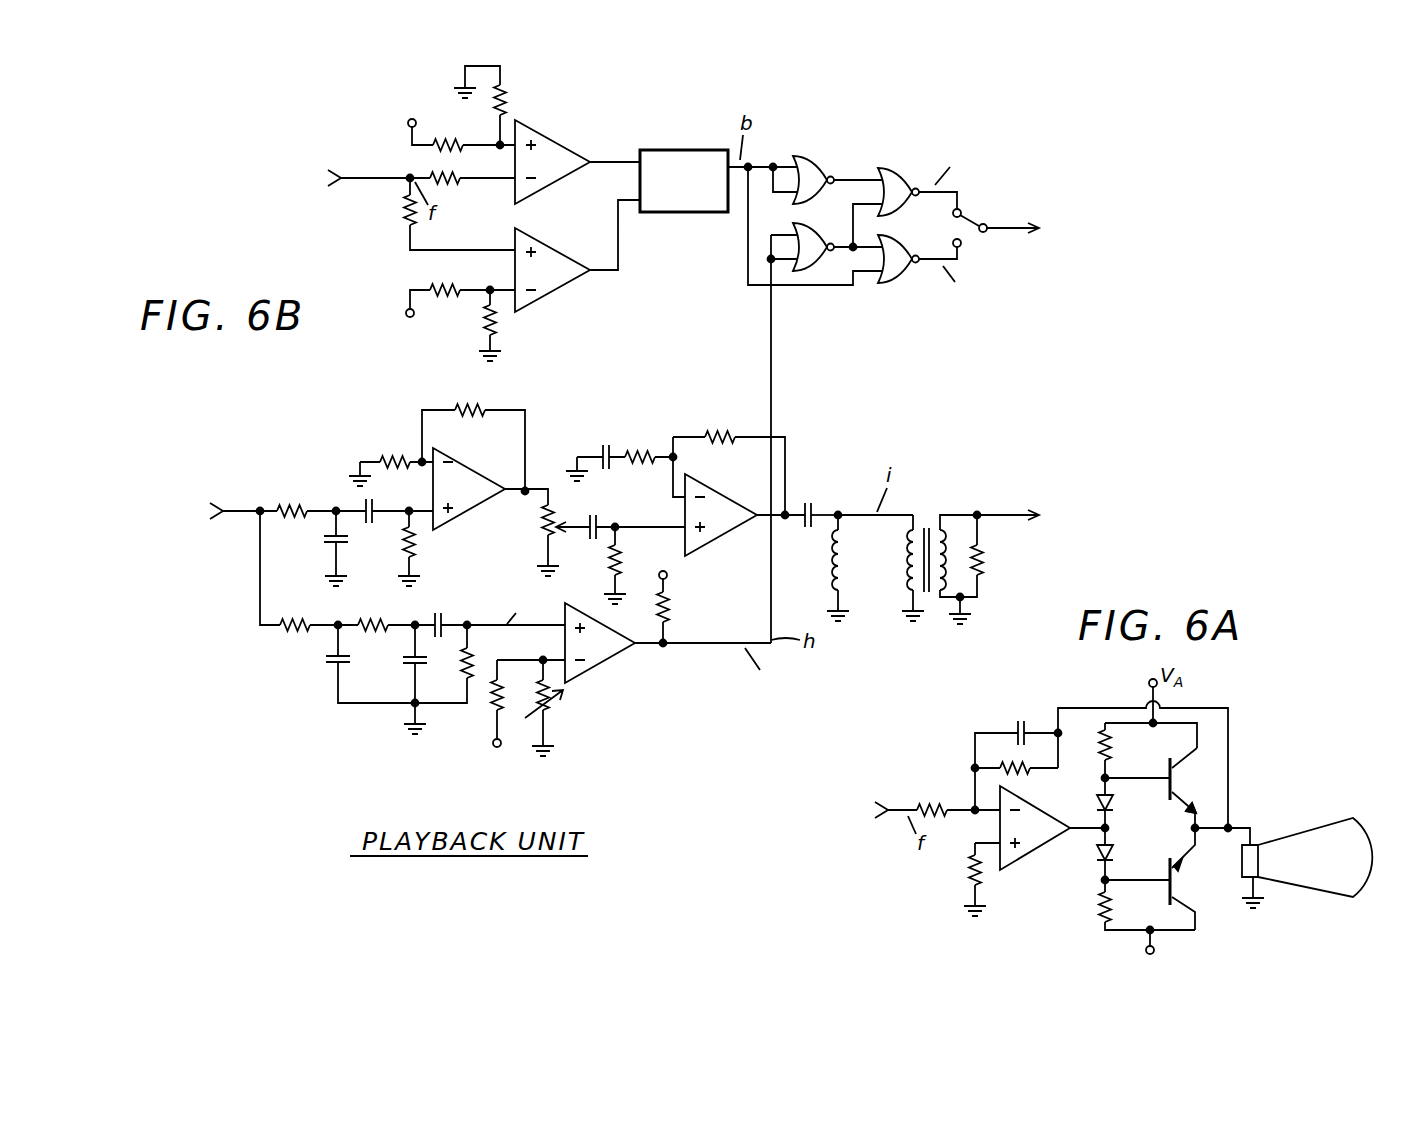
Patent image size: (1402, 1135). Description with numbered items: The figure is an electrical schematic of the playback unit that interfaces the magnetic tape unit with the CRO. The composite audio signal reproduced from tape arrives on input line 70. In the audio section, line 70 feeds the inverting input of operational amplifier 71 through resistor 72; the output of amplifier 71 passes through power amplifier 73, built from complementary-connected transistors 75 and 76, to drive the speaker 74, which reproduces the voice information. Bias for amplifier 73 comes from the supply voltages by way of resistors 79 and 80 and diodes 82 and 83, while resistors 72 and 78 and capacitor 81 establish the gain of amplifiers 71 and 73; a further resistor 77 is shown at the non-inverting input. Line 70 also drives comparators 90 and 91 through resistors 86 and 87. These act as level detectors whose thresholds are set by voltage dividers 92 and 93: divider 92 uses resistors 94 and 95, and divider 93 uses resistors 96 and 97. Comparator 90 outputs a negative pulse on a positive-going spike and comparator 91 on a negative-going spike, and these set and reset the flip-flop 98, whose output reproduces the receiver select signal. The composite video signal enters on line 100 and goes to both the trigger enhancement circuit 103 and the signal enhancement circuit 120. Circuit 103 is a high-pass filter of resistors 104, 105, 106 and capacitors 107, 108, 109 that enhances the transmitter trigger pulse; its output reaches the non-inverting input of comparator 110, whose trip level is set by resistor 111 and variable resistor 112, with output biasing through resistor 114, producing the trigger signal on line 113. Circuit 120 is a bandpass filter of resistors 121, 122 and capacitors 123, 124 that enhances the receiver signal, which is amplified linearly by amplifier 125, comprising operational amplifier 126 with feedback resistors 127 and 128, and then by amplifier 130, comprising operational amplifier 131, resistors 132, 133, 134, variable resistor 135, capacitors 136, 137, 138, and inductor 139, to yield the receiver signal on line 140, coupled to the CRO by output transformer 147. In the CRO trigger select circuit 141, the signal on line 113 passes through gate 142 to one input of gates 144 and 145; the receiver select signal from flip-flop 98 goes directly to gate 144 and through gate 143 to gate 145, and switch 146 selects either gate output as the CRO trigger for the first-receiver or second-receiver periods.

In FIG. 6B, the input line 70 is at (380, 177).
In FIG. 6A, the input line 70 is at (895, 822).
In FIG. 6A, the operational amplifier 71 is at (1040, 860).
In FIG. 6A, the resistor 72 is at (927, 801).
In FIG. 6A, the power amplifier 73 is at (1149, 838).
In FIG. 6A, the speaker 74 is at (1288, 888).
In FIG. 6A, the transistor 75 is at (1178, 783).
In FIG. 6A, the transistor 76 is at (1178, 891).
In FIG. 6A, the resistor 77 is at (970, 872).
In FIG. 6A, the resistor 78 is at (1022, 778).
In FIG. 6A, the resistor 79 is at (1112, 750).
In FIG. 6A, the resistor 80 is at (1098, 914).
In FIG. 6A, the capacitor 81 is at (1015, 726).
In FIG. 6A, the diode 82 is at (1100, 792).
In FIG. 6A, the diode 83 is at (1096, 857).
In FIG. 6B, the resistor 86 is at (455, 185).
In FIG. 6B, the resistor 87 is at (402, 214).
In FIG. 6B, the comparator 90 is at (553, 130).
In FIG. 6B, the comparator 91 is at (552, 240).
In FIG. 6B, the voltage divider 92 is at (474, 108).
In FIG. 6B, the voltage divider 93 is at (469, 322).
In FIG. 6B, the resistor 94 is at (450, 138).
In FIG. 6B, the resistor 95 is at (510, 95).
In FIG. 6B, the resistor 96 is at (447, 298).
In FIG. 6B, the resistor 97 is at (500, 320).
In FIG. 6B, the flip-flop 98 is at (668, 148).
In FIG. 6B, the line 100 is at (242, 505).
In FIG. 6B, the trigger enhancement circuit 103 is at (406, 622).
In FIG. 6B, the resistor 104 is at (288, 632).
In FIG. 6B, the resistor 105 is at (370, 620).
In FIG. 6B, the resistor 106 is at (476, 666).
In FIG. 6B, the capacitor 107 is at (325, 664).
In FIG. 6B, the capacitor 108 is at (405, 665).
In FIG. 6B, the capacitor 109 is at (452, 622).
In FIG. 6B, the comparator 110 is at (610, 662).
In FIG. 6B, the resistor 111 is at (488, 697).
In FIG. 6B, the variable resistor 112 is at (558, 714).
In FIG. 6B, the line 113 is at (771, 665).
In FIG. 6B, the resistor 114 is at (672, 606).
In FIG. 6B, the signal enhancement circuit 120 is at (346, 508).
In FIG. 6B, the resistor 121 is at (292, 505).
In FIG. 6B, the resistor 122 is at (400, 540).
In FIG. 6B, the capacitor 123 is at (325, 540).
In FIG. 6B, the capacitor 124 is at (378, 507).
In FIG. 6B, the amplifier 125 is at (469, 478).
In FIG. 6B, the operational amplifier 126 is at (473, 466).
In FIG. 6B, the resistor 127 is at (392, 455).
In FIG. 6B, the resistor 128 is at (478, 408).
In FIG. 6B, the amplifier 130 is at (625, 441).
In FIG. 6B, the operational amplifier 131 is at (720, 488).
In FIG. 6B, the resistor 132 is at (652, 448).
In FIG. 6B, the resistor 133 is at (607, 560).
In FIG. 6B, the resistor 134 is at (720, 430).
In FIG. 6B, the variable resistor 135 is at (532, 542).
In FIG. 6B, the capacitor 136 is at (600, 515).
In FIG. 6B, the capacitor 137 is at (600, 445).
In FIG. 6B, the capacitor 138 is at (815, 505).
In FIG. 6B, the inductor 139 is at (826, 555).
In FIG. 6B, the line 140 is at (898, 522).
In FIG. 6B, the CRO trigger select circuit 141 is at (973, 371).
In FIG. 6B, the gate 142 is at (812, 235).
In FIG. 6B, the gate 143 is at (815, 165).
In FIG. 6B, the gate 144 is at (897, 283).
In FIG. 6B, the gate 145 is at (890, 176).
In FIG. 6B, the switch 146 is at (990, 223).
In FIG. 6B, the output transformer 147 is at (1037, 551).